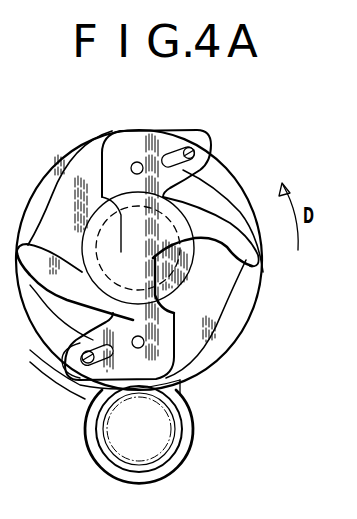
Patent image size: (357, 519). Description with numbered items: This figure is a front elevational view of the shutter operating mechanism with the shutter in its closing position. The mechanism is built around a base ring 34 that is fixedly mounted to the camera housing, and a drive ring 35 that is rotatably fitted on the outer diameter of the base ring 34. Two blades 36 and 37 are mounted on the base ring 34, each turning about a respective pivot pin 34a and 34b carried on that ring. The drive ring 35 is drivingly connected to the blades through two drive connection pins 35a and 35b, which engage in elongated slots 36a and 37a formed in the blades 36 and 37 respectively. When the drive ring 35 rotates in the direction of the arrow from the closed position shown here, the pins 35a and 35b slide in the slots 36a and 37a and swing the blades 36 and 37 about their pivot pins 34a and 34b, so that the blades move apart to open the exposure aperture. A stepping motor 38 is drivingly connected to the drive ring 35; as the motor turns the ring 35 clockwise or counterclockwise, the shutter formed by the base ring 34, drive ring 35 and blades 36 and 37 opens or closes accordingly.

The base ring 34 is at (213, 308).
The pivot pin 34a is at (138, 161).
The pivot pin 34b is at (150, 347).
The drive ring 35 is at (250, 290).
The drive connection pin 35a is at (195, 153).
The drive connection pin 35b is at (67, 378).
The blade 36 is at (123, 147).
The elongated slot 36a is at (180, 150).
The blade 37 is at (60, 342).
The elongated slot 37a is at (100, 362).
The stepping motor 38 is at (192, 438).